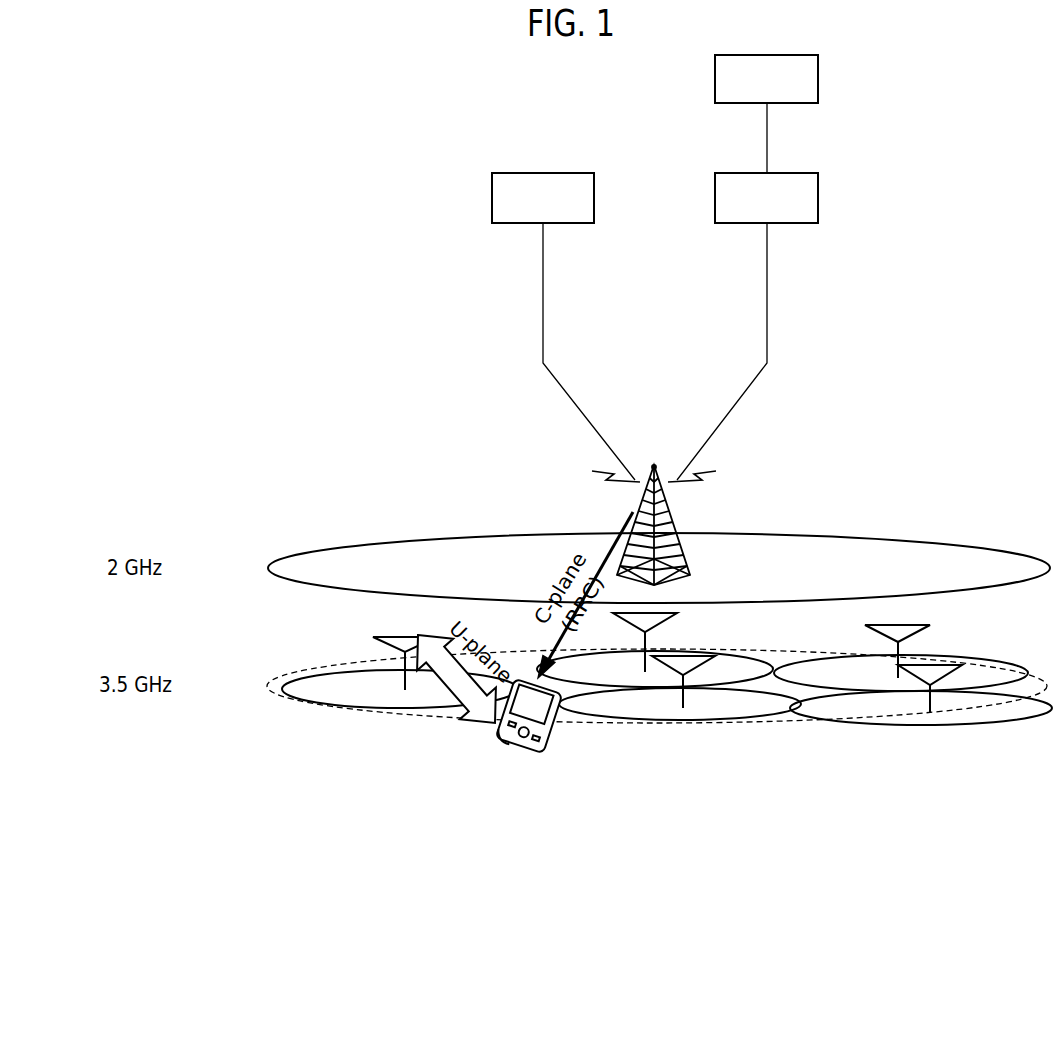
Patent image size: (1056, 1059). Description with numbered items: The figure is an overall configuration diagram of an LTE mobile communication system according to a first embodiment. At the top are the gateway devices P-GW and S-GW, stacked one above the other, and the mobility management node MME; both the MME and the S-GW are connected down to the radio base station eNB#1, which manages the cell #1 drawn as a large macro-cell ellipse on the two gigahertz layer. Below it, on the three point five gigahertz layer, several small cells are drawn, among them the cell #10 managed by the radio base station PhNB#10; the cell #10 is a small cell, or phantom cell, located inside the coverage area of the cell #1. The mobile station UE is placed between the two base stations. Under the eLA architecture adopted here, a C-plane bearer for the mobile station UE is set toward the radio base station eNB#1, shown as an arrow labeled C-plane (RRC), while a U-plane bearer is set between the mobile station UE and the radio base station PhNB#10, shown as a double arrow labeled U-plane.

The cell #1 / radio base station eNB# 1 is at (900, 505).
The cell #10 / radio base station PhNB# 10 is at (343, 687).
The mobile station UE is at (528, 733).
The mobility management node MME is at (543, 198).
The gateway device S-GW is at (766, 163).
The gateway device P-GW is at (766, 79).